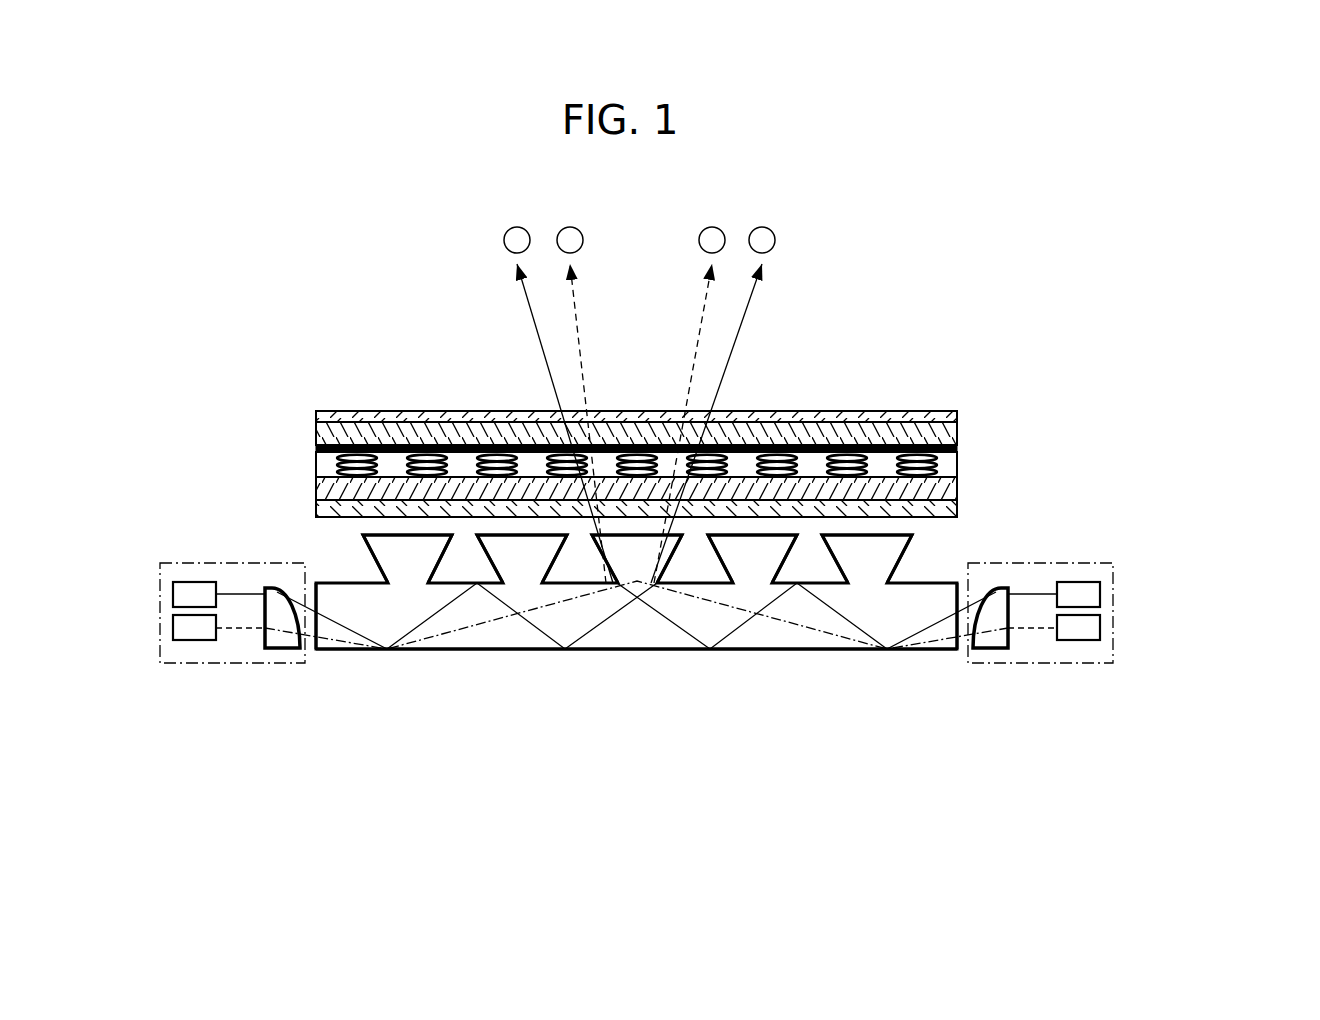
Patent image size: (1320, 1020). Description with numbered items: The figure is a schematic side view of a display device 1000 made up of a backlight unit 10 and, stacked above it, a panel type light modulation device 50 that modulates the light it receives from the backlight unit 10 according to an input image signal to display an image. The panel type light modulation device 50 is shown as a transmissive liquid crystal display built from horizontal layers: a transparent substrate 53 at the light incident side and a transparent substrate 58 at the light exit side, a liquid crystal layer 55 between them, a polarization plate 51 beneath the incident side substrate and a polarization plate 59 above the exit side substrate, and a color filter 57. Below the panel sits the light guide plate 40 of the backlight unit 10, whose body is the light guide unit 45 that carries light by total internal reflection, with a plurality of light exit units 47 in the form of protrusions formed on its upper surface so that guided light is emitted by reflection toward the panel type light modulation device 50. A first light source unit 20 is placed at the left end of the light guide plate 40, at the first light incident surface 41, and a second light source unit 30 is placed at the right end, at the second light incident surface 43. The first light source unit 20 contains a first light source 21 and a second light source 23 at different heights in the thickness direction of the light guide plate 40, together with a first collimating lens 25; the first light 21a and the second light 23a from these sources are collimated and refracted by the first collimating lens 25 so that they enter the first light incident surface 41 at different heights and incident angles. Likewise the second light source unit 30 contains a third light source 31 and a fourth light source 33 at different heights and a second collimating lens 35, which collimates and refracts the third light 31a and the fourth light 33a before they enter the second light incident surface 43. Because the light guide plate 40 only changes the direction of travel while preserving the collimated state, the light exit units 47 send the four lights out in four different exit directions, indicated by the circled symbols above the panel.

The display device 1000 is at (1228, 430).
The backlight unit 10 is at (1172, 538).
The panel type light modulation device 50 is at (968, 412).
The polarization plate 59 is at (316, 415).
The transparent substrate 58 is at (316, 430).
The color filter 57 is at (316, 448).
The liquid crystal layer 55 is at (316, 465).
The transparent substrate 53 is at (316, 486).
The polarization plate 51 is at (316, 510).
The light guide plate 40 is at (636, 621).
The first light incident surface 41 is at (314, 652).
The second light incident surface 43 is at (962, 592).
The light guide unit 45 is at (637, 650).
The light exit units 47 is at (886, 548).
The first light source unit 20 is at (178, 664).
The first light source 21 is at (178, 627).
The first light 21a is at (235, 631).
The second light source 23 is at (178, 590).
The second light 23a is at (232, 592).
The first collimating lens 25 is at (280, 650).
The second light source unit 30 is at (1090, 664).
The third light source 31 is at (1102, 628).
The third light 31a is at (1038, 631).
The fourth light source 33 is at (1102, 594).
The fourth light 33a is at (1037, 592).
The second collimating lens 35 is at (990, 650).